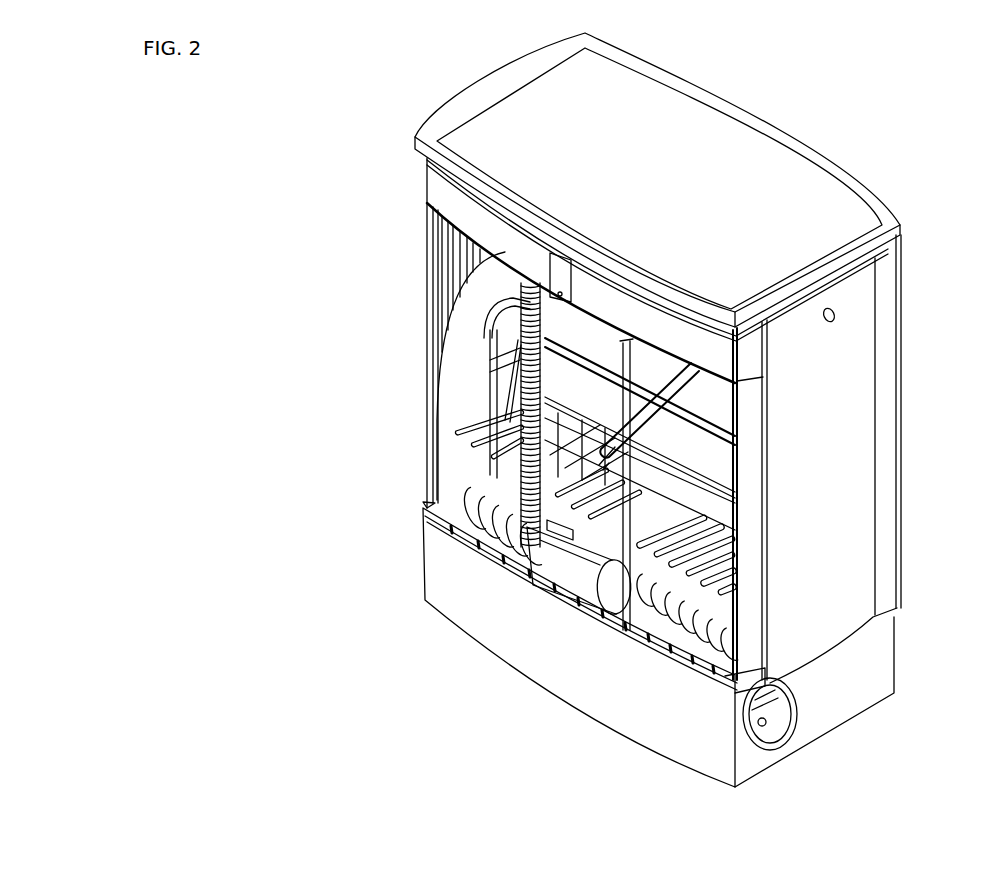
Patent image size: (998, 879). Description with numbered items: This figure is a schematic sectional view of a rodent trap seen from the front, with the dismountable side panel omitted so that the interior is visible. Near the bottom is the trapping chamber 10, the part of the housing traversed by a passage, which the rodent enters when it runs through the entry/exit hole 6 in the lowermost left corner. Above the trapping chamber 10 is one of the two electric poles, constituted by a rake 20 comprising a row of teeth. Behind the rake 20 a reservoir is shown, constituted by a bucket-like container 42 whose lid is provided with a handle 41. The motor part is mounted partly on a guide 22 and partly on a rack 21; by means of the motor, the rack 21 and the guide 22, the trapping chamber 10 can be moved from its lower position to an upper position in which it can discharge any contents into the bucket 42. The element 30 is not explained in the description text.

The entry/exit hole 6 is at (745, 727).
The trapping chamber 10 is at (705, 590).
The rake 20 is at (450, 439).
The rack 21 is at (423, 508).
The guide 22 is at (620, 588).
The motor 30 is at (560, 553).
The handle 41 is at (645, 427).
The bucket-like container 42 is at (720, 398).